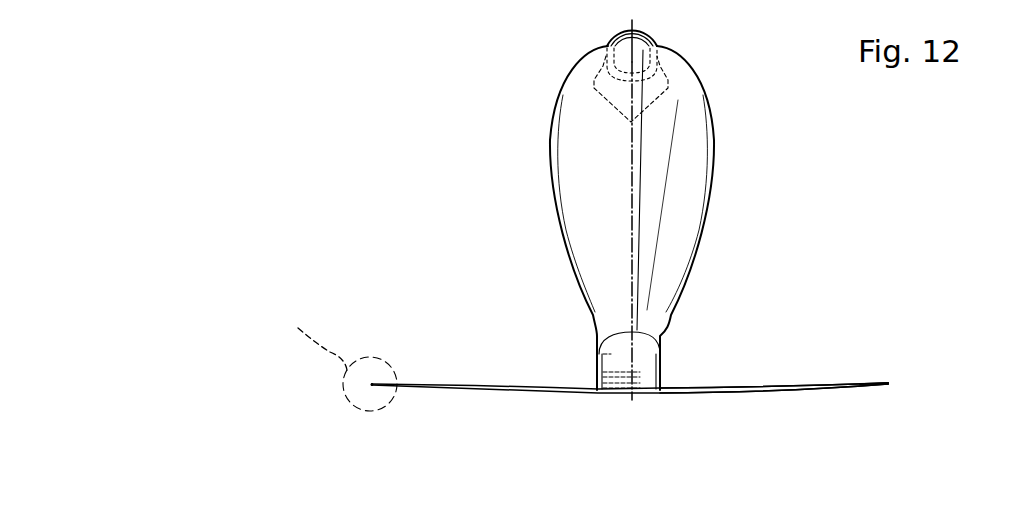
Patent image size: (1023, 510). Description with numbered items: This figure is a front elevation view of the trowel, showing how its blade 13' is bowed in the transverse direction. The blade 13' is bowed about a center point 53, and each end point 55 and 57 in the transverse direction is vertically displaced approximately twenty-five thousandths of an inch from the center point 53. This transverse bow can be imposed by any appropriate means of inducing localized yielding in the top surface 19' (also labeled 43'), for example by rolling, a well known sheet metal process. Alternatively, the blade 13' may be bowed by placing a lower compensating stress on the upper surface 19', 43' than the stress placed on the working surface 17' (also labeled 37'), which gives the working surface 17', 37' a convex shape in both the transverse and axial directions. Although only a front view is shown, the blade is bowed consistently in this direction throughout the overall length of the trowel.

The blade 13' is at (630, 425).
The working surface 17' is at (774, 420).
The lower surface 37' is at (774, 420).
The top surface 19' is at (774, 359).
The upper surface 43' is at (774, 359).
The center point 53 is at (628, 400).
The end point 55 is at (372, 384).
The end point 57 is at (888, 383).